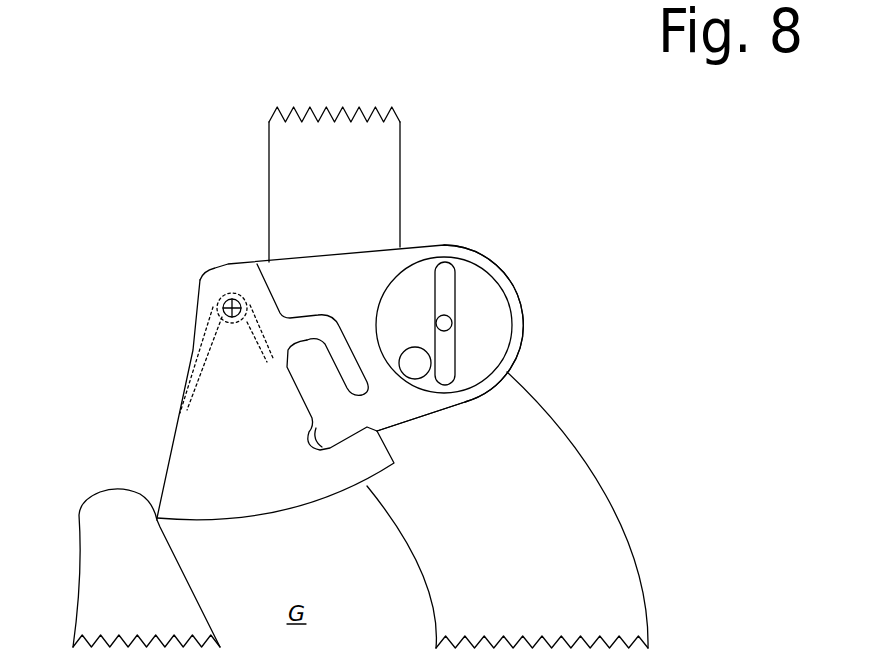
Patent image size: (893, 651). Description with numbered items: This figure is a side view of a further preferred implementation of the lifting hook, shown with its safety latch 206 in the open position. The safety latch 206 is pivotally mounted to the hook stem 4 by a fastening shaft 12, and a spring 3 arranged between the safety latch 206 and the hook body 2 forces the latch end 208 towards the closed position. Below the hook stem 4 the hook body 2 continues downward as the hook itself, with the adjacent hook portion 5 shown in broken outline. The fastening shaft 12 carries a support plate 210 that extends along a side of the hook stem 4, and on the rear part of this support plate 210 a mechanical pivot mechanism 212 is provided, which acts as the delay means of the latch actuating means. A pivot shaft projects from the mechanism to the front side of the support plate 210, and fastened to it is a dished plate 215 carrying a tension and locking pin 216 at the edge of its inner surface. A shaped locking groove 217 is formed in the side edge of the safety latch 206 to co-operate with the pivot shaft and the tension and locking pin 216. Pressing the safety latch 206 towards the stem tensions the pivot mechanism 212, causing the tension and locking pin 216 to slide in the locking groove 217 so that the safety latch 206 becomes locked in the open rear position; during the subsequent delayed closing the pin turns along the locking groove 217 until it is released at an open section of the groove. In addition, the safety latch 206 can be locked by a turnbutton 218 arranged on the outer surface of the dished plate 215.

The hook body 2 is at (617, 504).
The spring 3 is at (200, 332).
The hook stem 4 is at (400, 148).
The strap portion 5 is at (78, 505).
The fastening shaft 12 is at (222, 295).
The safety latch 206 is at (138, 408).
The latch end 208 is at (165, 483).
The support plate 210 is at (407, 410).
The mechanical pivot mechanism 212 is at (498, 273).
The dished plate 215 is at (497, 302).
The tension and locking pin 216 is at (422, 387).
The locking groove 217 is at (297, 365).
The turnbutton 218 is at (458, 352).